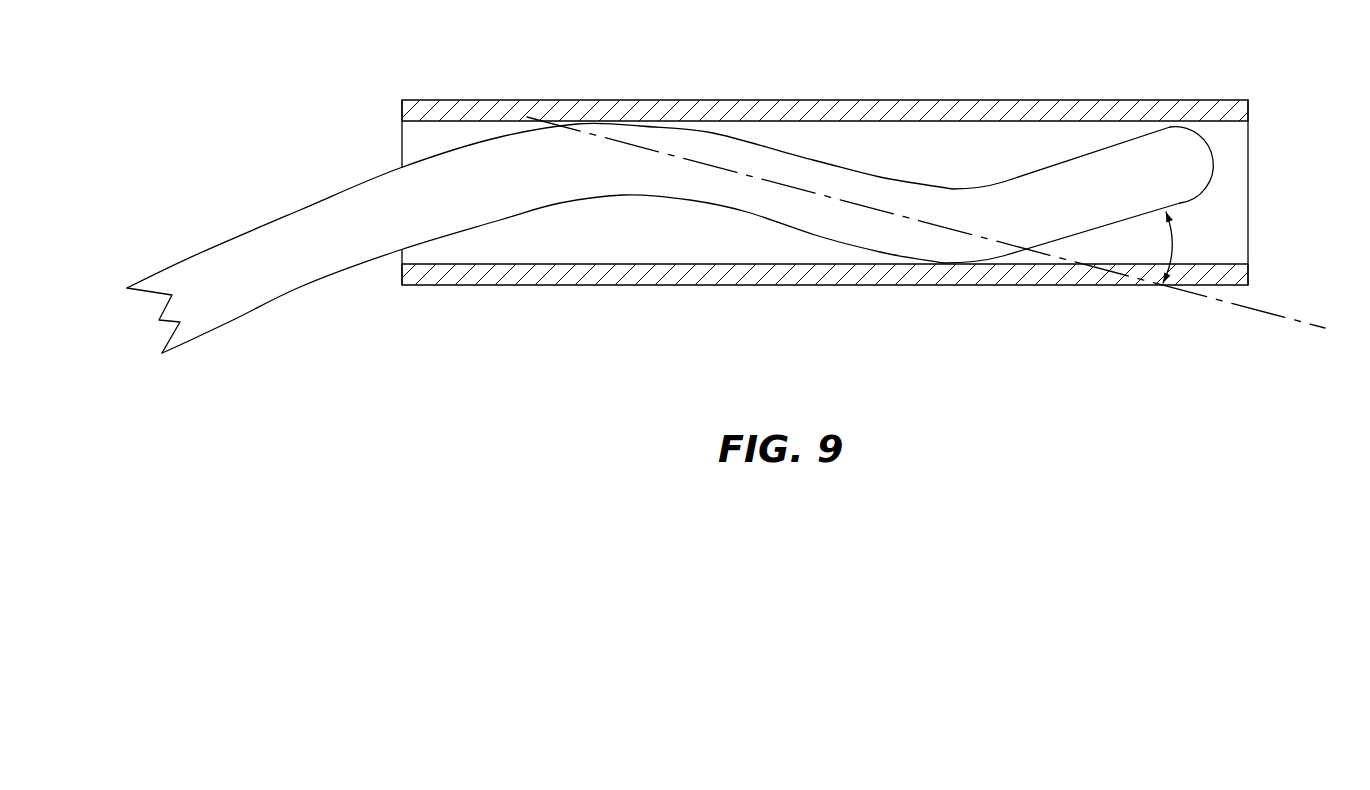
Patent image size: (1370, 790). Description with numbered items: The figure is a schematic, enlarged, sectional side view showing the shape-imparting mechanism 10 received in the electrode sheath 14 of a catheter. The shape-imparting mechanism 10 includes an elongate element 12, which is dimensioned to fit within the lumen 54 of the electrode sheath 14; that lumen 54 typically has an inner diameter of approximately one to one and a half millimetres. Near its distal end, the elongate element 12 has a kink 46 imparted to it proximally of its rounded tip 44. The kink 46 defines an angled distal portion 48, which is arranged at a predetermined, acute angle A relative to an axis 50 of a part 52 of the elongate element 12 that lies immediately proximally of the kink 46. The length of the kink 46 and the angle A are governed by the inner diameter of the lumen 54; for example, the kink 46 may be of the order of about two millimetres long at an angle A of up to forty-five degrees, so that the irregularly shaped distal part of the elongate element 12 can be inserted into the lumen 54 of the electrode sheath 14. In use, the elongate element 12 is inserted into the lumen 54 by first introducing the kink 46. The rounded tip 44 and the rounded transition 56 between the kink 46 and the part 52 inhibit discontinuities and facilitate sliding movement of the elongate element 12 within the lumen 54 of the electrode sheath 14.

The shape-imparting mechanism 10 is at (331, 142).
The elongate element 12 is at (602, 140).
The electrode sheath 14 is at (1157, 107).
The rounded tip 44 is at (1197, 157).
The kink 46 is at (1044, 142).
The angled distal portion 48 is at (1097, 220).
The axis 50 is at (837, 197).
The part of the elongate element 52 is at (797, 160).
The lumen 54 is at (668, 247).
The rounded transition 56 is at (945, 263).
The angle A is at (1173, 237).